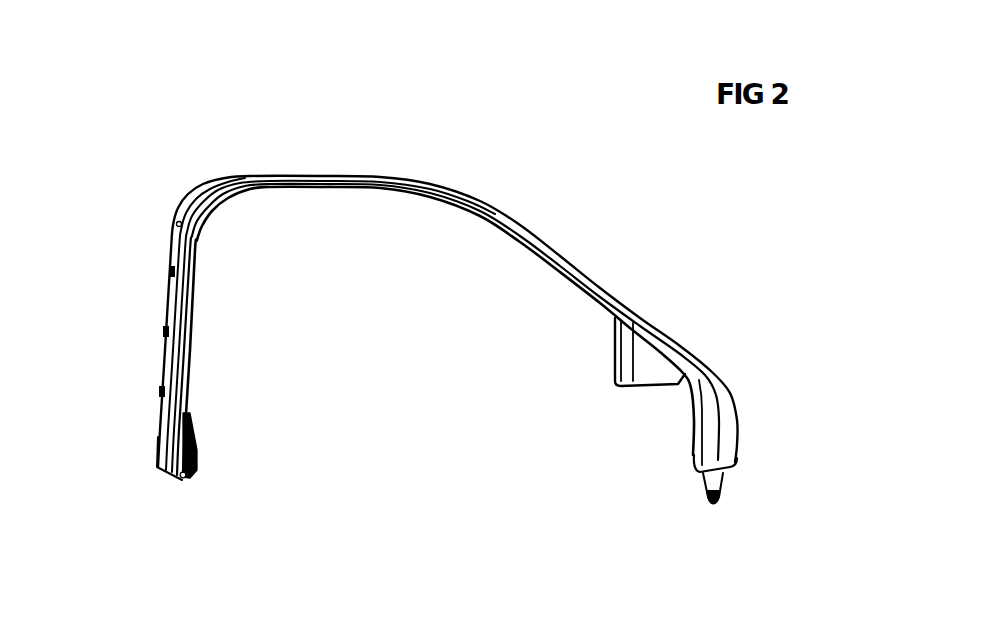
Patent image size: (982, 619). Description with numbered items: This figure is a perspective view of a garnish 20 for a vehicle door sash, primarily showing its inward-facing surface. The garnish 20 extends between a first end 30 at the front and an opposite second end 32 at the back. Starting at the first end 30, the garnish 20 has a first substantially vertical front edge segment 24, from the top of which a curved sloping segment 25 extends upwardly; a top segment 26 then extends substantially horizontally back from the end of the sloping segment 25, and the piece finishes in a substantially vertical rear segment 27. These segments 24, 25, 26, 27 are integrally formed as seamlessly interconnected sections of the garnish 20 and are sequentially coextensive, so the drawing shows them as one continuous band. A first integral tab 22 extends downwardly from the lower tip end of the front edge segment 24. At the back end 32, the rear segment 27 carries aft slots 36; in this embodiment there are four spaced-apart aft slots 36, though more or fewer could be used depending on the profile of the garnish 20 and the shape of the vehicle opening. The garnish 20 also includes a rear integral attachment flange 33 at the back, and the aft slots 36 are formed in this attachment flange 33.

The garnish 20 is at (286, 151).
The first integral tab 22 is at (719, 512).
The front edge segment 24 is at (741, 425).
The curved sloping segment 25 is at (590, 270).
The top segment 26 is at (293, 192).
The rear segment 27 is at (183, 343).
The first end 30 is at (753, 362).
The second end 32 is at (180, 487).
The rear integral attachment flange 33 is at (158, 437).
The aft slot 36 is at (160, 390).